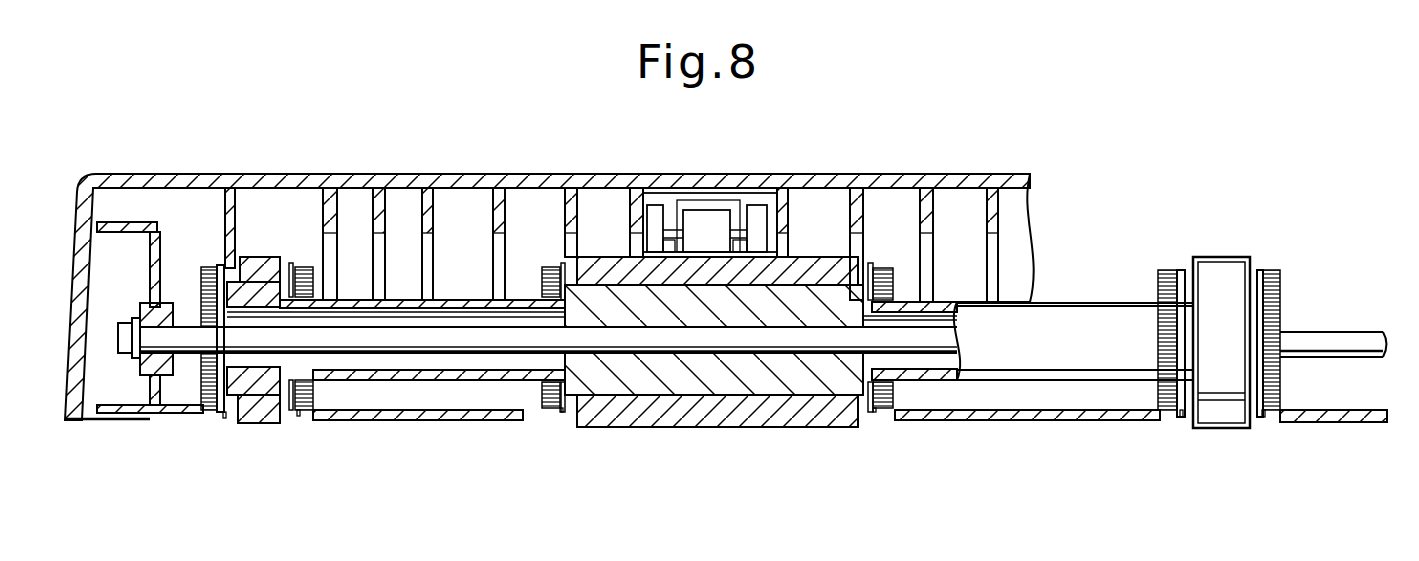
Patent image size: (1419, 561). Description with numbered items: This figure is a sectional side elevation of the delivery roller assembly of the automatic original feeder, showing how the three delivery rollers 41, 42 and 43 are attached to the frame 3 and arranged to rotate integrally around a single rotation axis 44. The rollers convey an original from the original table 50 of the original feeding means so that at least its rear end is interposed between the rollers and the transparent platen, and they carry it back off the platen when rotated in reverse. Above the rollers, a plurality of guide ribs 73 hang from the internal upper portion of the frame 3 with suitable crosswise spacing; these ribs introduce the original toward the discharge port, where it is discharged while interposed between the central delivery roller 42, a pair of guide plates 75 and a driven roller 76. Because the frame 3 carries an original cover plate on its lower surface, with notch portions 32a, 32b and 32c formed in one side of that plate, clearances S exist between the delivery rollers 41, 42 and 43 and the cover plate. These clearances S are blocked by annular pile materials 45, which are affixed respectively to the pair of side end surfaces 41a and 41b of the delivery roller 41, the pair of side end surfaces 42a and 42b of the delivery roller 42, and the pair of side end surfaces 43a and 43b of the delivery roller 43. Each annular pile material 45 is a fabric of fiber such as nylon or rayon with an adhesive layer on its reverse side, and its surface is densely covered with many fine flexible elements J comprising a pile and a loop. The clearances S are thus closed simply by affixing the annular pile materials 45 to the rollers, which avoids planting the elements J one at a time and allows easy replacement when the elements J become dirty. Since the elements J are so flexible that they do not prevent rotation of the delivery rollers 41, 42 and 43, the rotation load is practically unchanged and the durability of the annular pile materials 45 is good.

The frame 3 is at (935, 172).
The delivery roller 41 is at (267, 414).
The side end surface of delivery roller 41 41a is at (208, 298).
The side end surface of delivery roller 41 41b is at (316, 410).
The delivery roller 42 is at (722, 421).
The side end surface of delivery roller 42 42a is at (523, 380).
The side end surface of delivery roller 42 42b is at (900, 375).
The delivery roller 43 is at (1230, 413).
The side end surface of delivery roller 43 43a is at (1167, 297).
The side end surface of delivery roller 43 43b is at (1262, 294).
The rotation axis 44 is at (1361, 340).
The annular pile material 45 is at (213, 258).
The original table 50 is at (545, 358).
The guide rib 73 is at (491, 232).
The guide plate 75 is at (655, 235).
The driven roller 76 is at (713, 225).
The notch portion 32a is at (233, 420).
The notch portion 32b is at (863, 428).
The notch portion 32c is at (1253, 420).
The clearance S is at (223, 419).
The flexible element J is at (305, 417).